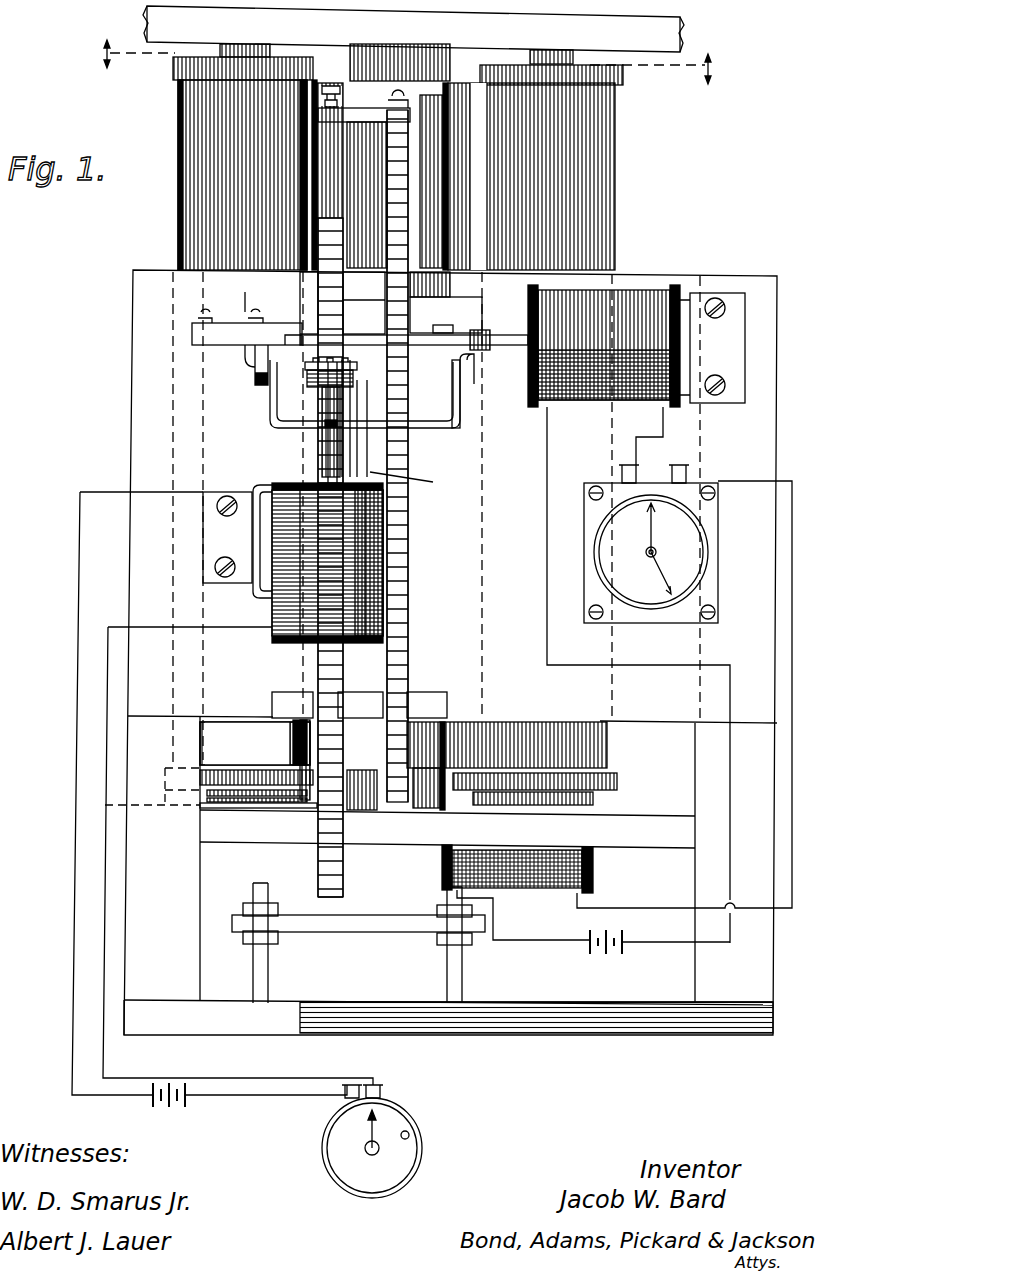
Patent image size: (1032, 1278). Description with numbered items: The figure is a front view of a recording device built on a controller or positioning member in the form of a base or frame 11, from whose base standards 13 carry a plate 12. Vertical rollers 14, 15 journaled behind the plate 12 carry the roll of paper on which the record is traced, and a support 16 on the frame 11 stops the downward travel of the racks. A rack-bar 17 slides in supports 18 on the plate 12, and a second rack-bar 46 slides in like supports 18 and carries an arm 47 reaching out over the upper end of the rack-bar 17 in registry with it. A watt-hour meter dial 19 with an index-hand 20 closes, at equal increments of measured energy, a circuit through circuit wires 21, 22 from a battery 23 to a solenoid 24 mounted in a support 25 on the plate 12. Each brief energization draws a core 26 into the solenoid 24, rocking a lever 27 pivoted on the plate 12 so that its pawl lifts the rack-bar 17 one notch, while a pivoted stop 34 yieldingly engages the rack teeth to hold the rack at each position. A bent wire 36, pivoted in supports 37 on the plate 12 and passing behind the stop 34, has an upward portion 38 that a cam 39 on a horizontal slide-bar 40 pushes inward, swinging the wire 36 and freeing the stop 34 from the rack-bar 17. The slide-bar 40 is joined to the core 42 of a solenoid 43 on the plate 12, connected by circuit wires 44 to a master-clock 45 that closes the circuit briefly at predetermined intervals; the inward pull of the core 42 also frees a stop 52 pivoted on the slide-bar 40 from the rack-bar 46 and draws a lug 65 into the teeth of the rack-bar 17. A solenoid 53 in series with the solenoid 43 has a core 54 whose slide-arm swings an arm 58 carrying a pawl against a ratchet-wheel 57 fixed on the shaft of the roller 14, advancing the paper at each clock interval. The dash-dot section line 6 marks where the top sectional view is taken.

The section line 6 is at (404, 62).
The base or frame 11 is at (568, 1040).
The plate 12 is at (150, 356).
The standards 13 is at (215, 893).
The vertical roller 14 is at (243, 163).
The vertical roller 15 is at (533, 167).
The support 16 is at (319, 920).
The rack-bar 17 is at (342, 882).
The supports 18 is at (357, 284).
The dial 19 is at (410, 1150).
The index-hand 20 is at (378, 1125).
The circuit wire 21 is at (273, 1089).
The circuit wire 22 is at (255, 1038).
The battery 23 is at (170, 1113).
The solenoid 24 is at (277, 490).
The support 25 is at (248, 465).
The core 26 is at (322, 445).
The lever 27 is at (305, 378).
The stop 34 is at (415, 484).
The bent wire 36 is at (455, 430).
The supports 37 is at (293, 358).
The upward portion of wire 38 is at (258, 318).
The cam 39 is at (210, 318).
The slide-bar 40 is at (425, 345).
The core 42 is at (488, 330).
The solenoid 43 is at (630, 295).
The circuit wires 44 is at (547, 502).
The master-clock 45 is at (730, 503).
The second rack-bar 46 is at (406, 610).
The arm 47 is at (392, 104).
The stop 52 is at (443, 318).
The solenoid 53 is at (537, 880).
The core 54 is at (400, 62).
The ratchet-wheel 57 is at (288, 805).
The arm 58 is at (245, 803).
The lug 65 is at (292, 333).